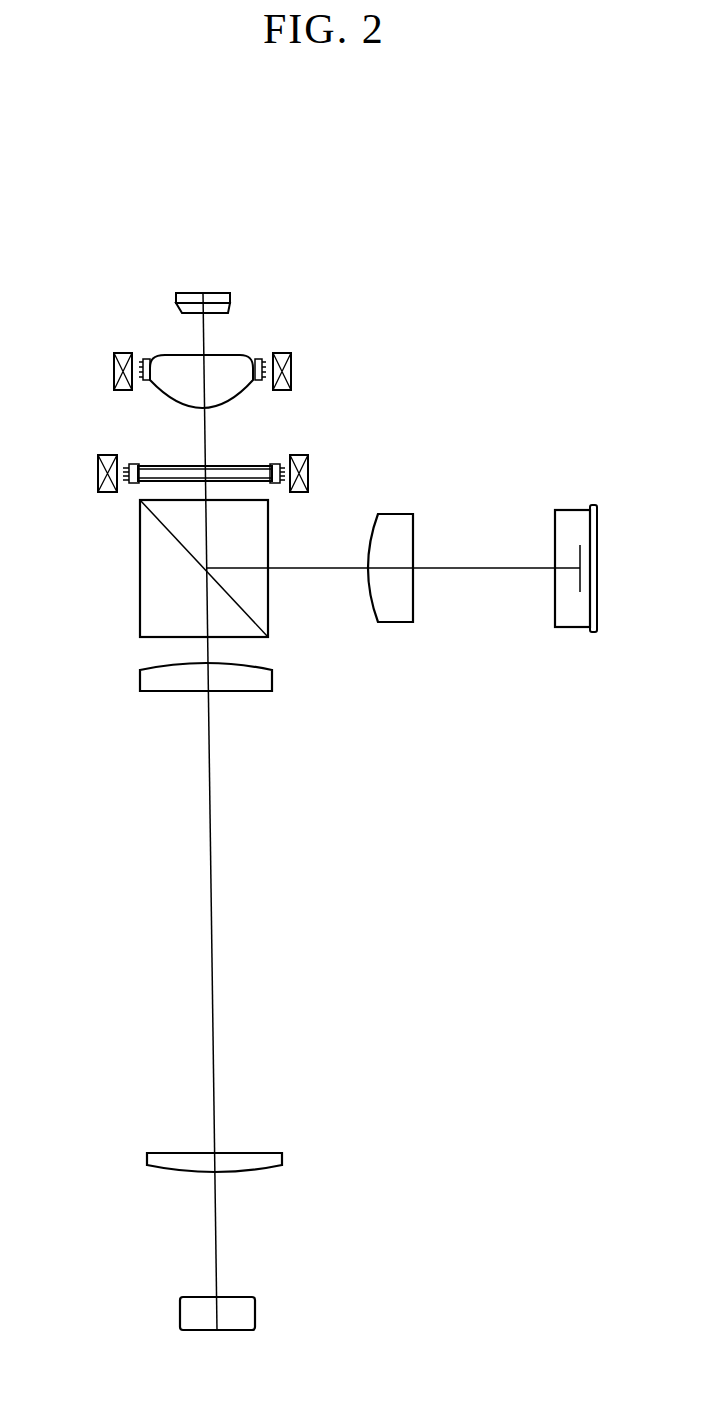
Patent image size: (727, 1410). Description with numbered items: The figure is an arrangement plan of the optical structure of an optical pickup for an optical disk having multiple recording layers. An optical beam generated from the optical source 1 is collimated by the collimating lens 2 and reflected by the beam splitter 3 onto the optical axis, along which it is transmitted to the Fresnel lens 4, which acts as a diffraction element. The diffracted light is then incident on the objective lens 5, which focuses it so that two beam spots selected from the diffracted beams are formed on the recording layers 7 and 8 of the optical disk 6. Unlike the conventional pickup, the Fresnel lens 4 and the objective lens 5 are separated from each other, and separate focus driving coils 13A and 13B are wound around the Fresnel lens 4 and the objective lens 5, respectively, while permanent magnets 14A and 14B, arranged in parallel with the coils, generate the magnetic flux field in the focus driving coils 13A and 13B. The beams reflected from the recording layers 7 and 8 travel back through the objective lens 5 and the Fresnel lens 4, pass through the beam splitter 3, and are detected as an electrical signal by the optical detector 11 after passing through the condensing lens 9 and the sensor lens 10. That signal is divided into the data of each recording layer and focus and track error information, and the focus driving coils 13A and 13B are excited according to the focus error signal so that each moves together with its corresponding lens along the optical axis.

The optical source 1 is at (573, 627).
The collimating lens 2 is at (393, 623).
The beam splitter 3 is at (140, 588).
The Fresnel lens 4 is at (153, 466).
The objective lens 5 is at (167, 362).
The optical disk 6 is at (176, 287).
The recording layer 7 is at (177, 313).
The recording layer 8 is at (230, 313).
The condensing lens 9 is at (140, 680).
The sensor lens 10 is at (278, 1158).
The optical detector 11 is at (253, 1307).
The focus driving coil 13A is at (285, 458).
The focus driving coil 13B is at (270, 355).
The permanent magnet 14A is at (308, 472).
The permanent magnet 14B is at (292, 373).